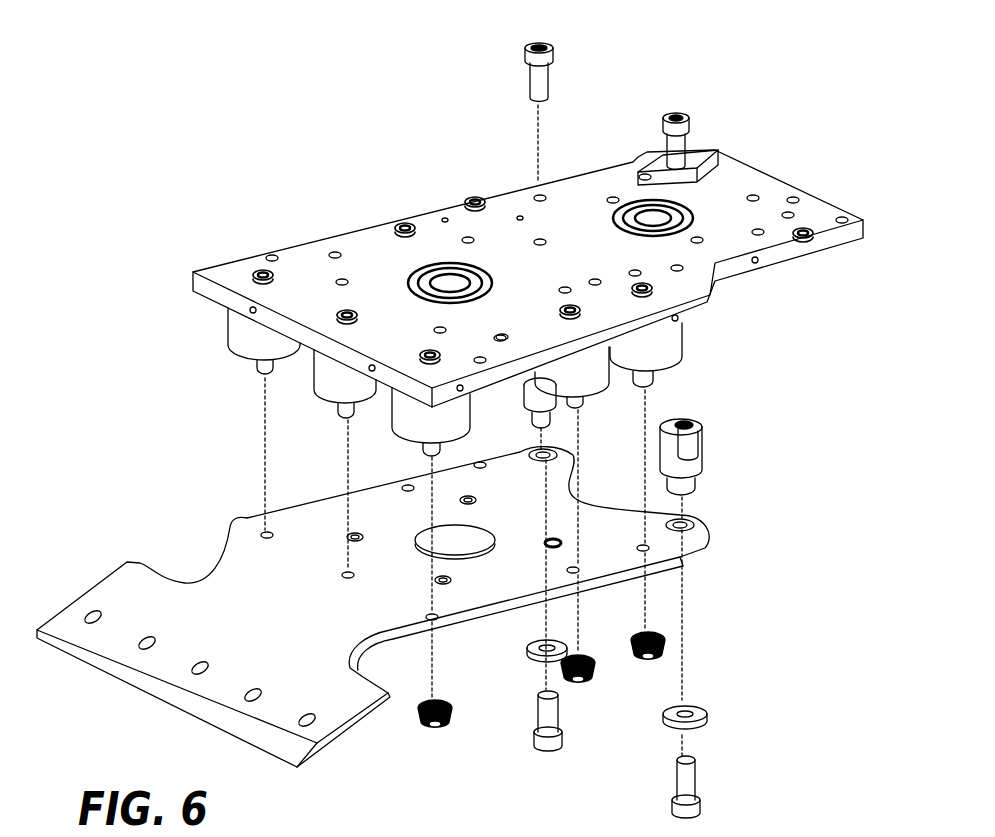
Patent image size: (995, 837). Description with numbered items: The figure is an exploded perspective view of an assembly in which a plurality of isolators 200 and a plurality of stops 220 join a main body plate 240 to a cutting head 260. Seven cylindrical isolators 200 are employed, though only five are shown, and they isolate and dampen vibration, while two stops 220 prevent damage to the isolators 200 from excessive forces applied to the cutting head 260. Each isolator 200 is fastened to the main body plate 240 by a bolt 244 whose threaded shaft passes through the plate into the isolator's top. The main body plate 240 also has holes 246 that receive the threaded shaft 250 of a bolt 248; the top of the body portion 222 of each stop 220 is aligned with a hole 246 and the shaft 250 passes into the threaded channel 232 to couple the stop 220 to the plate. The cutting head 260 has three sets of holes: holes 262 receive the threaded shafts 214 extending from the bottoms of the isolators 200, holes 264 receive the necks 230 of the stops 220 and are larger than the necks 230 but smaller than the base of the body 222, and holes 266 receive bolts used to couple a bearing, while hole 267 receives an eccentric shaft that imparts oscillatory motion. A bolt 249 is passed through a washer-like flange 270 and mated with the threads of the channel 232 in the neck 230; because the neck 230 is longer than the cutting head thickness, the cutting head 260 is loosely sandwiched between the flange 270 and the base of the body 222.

The isolator 200 is at (240, 345).
The threaded shaft 214 is at (258, 370).
The stop 220 is at (538, 405).
The body portion 222 is at (692, 442).
The neck 230 is at (697, 484).
The threaded channel 232 is at (690, 423).
The main body plate 240 is at (300, 252).
The bolt 244 is at (400, 225).
The hole 246 is at (545, 195).
The bolt 248 is at (556, 61).
The bolt 249 is at (540, 713).
The threaded shaft 250 is at (530, 80).
The cutting head 260 is at (137, 610).
The hole 262 is at (263, 532).
The hole 264 is at (560, 462).
The hole 266 is at (477, 500).
The hole 267 is at (458, 548).
The flange 270 is at (527, 652).